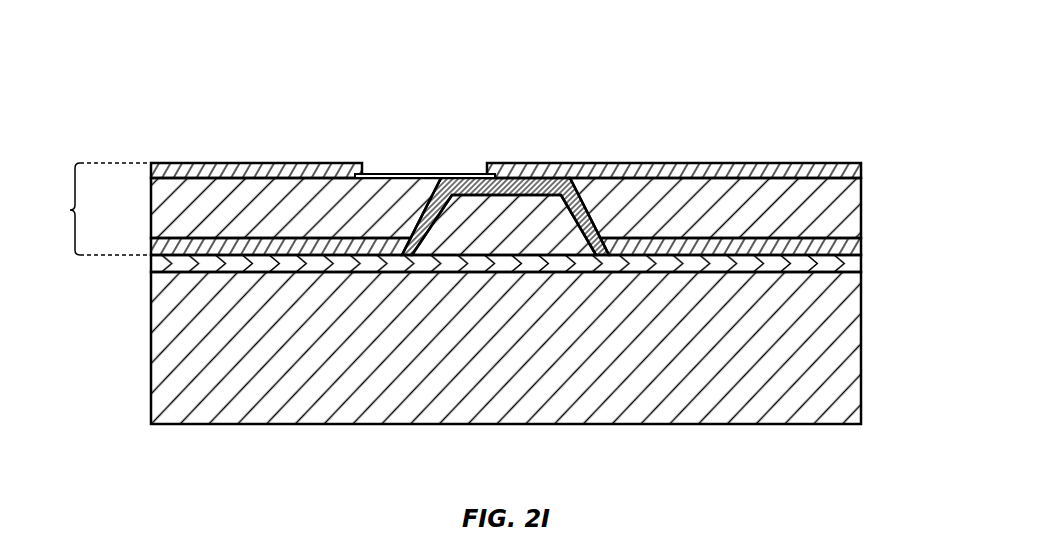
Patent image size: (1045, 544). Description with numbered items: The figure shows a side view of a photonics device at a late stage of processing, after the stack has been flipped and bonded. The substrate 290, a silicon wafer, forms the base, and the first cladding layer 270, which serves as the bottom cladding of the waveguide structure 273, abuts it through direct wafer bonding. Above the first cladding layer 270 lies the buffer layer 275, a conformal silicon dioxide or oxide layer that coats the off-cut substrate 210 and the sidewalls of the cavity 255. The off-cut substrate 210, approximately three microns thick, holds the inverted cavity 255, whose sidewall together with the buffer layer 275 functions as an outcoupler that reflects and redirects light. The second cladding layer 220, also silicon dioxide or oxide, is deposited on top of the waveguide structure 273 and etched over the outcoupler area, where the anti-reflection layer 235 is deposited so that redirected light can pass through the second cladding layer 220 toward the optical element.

The off-cut substrate 210 is at (148, 210).
The second cladding layer 220 is at (232, 163).
The anti-reflection layer 235 is at (415, 175).
The cavity 255 is at (517, 222).
The first cladding layer 270 is at (853, 265).
The waveguide structure 273 is at (92, 209).
The buffer layer 275 is at (853, 247).
The substrate 290 is at (265, 350).